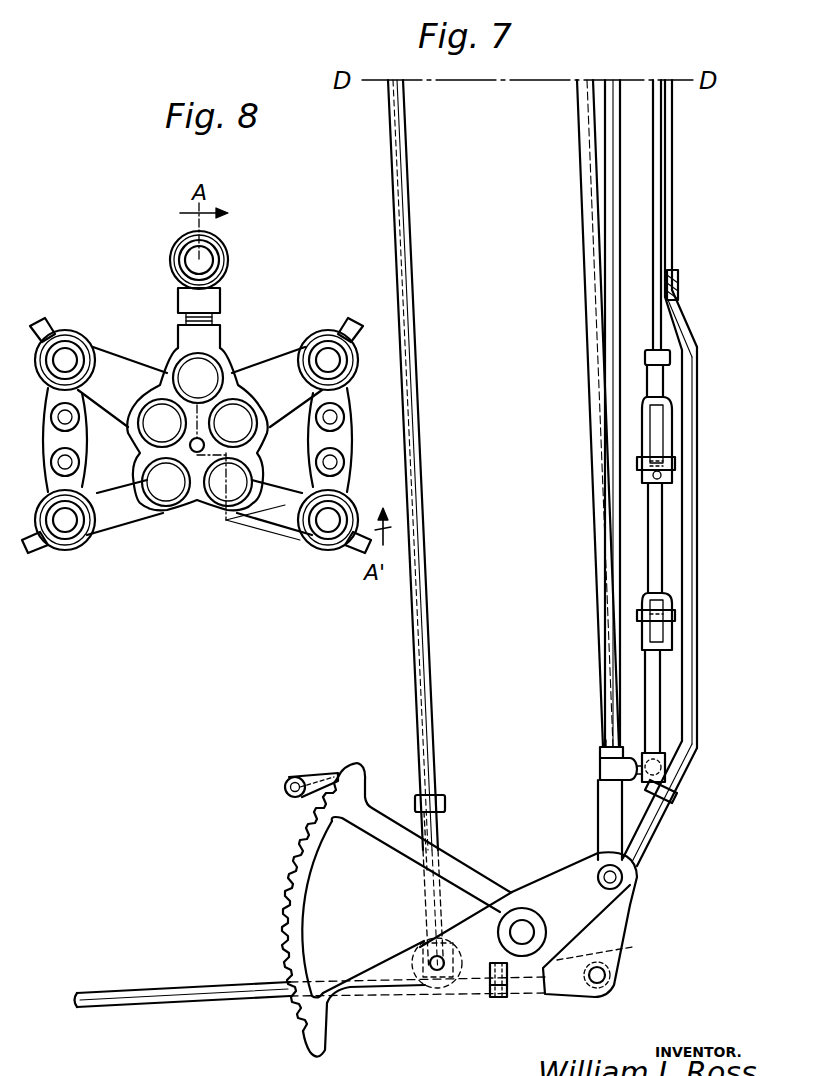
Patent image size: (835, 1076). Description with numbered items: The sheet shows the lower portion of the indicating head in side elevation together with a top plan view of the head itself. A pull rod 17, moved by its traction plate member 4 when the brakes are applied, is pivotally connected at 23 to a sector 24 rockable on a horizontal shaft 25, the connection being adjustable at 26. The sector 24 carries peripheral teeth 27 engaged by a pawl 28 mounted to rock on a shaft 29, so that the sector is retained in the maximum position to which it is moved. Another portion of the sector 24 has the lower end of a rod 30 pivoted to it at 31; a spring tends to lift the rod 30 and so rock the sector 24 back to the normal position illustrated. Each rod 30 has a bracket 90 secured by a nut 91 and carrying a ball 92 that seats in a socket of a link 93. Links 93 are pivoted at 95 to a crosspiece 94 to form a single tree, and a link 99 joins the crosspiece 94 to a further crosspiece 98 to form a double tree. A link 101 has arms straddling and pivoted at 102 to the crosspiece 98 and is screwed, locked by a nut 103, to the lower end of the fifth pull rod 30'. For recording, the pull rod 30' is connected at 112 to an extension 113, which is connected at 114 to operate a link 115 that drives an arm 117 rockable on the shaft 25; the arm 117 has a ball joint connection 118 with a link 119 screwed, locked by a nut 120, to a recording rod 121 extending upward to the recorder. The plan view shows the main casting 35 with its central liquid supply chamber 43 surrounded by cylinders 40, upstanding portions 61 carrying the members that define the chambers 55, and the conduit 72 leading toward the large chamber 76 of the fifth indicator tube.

In FIG. 7, the member 4 is at (604, 720).
In FIG. 7, the pull rod 17 is at (215, 992).
In FIG. 7, the pivotal connection 23 is at (611, 975).
In FIG. 7, the sector 24 is at (618, 915).
In FIG. 7, the horizontal shaft 25 is at (516, 930).
In FIG. 7, the adjustable connection 26 is at (498, 998).
In FIG. 7, the peripheral teeth 27 is at (320, 794).
In FIG. 7, the pawl 28 is at (319, 771).
In FIG. 7, the shaft 29 is at (284, 788).
In FIG. 7, the rod 30 is at (586, 413).
In FIG. 7, the pull rod 30' is at (632, 413).
In FIG. 7, the pivot 31 is at (597, 868).
In FIG. 8, the main casting 35 is at (165, 514).
In FIG. 8, the cylinder 40 is at (152, 433).
In FIG. 8, the liquid supply chamber 43 is at (203, 442).
In FIG. 8, the chamber 55 is at (68, 360).
In FIG. 8, the upstanding portion 61 is at (326, 334).
In FIG. 8, the conduit 72 is at (186, 320).
In FIG. 8, the chamber 76 is at (196, 260).
In FIG. 7, the bracket 90 is at (606, 772).
In FIG. 7, the nut 91 is at (600, 752).
In FIG. 7, the ball 92 is at (660, 747).
In FIG. 7, the link 93 is at (648, 688).
In FIG. 7, the crosspiece 94 is at (644, 600).
In FIG. 7, the pivot 95 is at (638, 614).
In FIG. 7, the crosspiece 98 is at (672, 477).
In FIG. 7, the link 99 is at (662, 530).
In FIG. 7, the link 101 is at (653, 383).
In FIG. 7, the pivot 102 is at (638, 462).
In FIG. 7, the nut 103 is at (668, 356).
In FIG. 7, the connection 112 is at (676, 285).
In FIG. 7, the extension 113 is at (697, 380).
In FIG. 7, the connection 114 is at (677, 790).
In FIG. 7, the link 115 is at (655, 823).
In FIG. 7, the arm 117 is at (615, 947).
In FIG. 7, the ball joint connection 118 is at (428, 960).
In FIG. 7, the link 119 is at (433, 834).
In FIG. 7, the nut 120 is at (446, 803).
In FIG. 7, the recording rod 121 is at (432, 733).